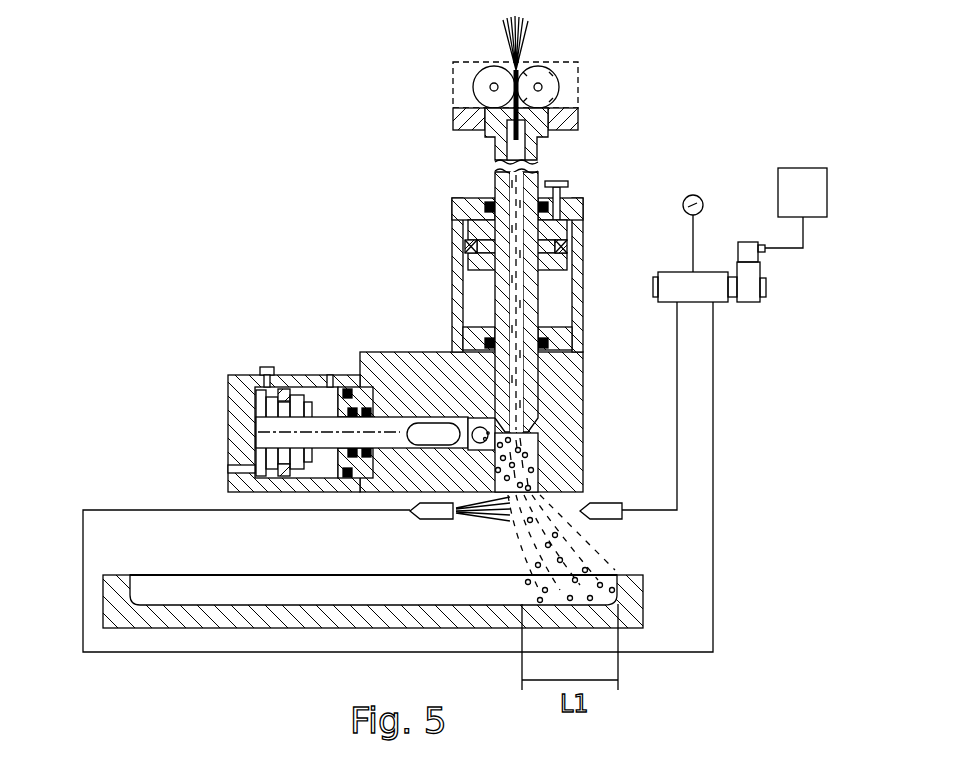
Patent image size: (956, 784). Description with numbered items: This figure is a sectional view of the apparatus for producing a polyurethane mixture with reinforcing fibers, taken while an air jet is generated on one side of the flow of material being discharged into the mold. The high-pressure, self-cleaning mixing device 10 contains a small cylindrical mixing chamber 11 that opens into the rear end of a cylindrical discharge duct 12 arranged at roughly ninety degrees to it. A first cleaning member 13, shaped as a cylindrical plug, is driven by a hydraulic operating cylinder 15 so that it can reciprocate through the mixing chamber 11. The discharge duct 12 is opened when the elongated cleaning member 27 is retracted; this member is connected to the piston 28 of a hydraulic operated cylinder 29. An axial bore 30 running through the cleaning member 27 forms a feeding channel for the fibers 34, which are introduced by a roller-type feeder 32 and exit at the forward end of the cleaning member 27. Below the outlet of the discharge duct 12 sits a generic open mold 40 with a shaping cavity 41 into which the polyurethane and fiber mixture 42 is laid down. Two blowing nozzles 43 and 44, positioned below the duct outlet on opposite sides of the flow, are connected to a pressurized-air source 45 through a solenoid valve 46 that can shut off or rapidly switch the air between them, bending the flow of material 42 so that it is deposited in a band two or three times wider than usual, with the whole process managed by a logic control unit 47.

The mixing device 10 is at (432, 377).
The mixing chamber 11 is at (467, 428).
The discharge duct 12 is at (532, 448).
The first cleaning member 13 is at (338, 427).
The hydraulic operating cylinder 15 is at (240, 380).
The cleaning member 27 is at (533, 302).
The piston 28 is at (453, 80).
The hydraulic operated cylinder 29 is at (583, 232).
The axial bore 30 is at (520, 288).
The roller-type feeder 32 is at (568, 118).
The fibers 34 is at (522, 52).
The open mold 40 is at (627, 623).
The shaping cavity 41 is at (165, 590).
The polyurethane and fiber mixture 42 is at (573, 567).
The blowing nozzle 43 is at (427, 513).
The blowing nozzle 44 is at (611, 504).
The pressurized-air source 45 is at (697, 200).
The solenoid valve 46 is at (710, 295).
The logic control unit 47 is at (800, 180).